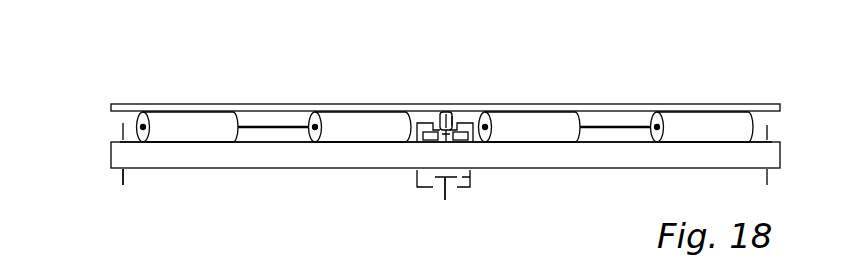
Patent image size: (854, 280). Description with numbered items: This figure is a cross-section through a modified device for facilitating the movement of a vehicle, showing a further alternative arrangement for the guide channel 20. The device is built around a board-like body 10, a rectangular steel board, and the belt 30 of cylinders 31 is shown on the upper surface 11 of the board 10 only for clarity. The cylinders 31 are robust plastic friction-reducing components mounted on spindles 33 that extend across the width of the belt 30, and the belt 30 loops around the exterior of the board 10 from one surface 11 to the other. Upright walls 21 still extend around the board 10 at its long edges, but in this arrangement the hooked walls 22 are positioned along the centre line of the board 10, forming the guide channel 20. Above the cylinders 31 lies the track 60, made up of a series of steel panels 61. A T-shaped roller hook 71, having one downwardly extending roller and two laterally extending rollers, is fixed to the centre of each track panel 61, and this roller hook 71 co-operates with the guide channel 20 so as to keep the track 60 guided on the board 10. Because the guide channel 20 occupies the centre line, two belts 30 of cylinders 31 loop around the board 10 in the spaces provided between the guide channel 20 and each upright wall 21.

The board-like body 10 is at (270, 157).
The surface 11 is at (213, 143).
The guide channel 20 is at (430, 125).
The upright wall 21 is at (123, 176).
The hooked wall 22 is at (468, 188).
The belt 30 is at (117, 123).
The cylinder 31 is at (180, 122).
The spindle 33 is at (612, 123).
The track 60 is at (364, 104).
The panel 61 is at (448, 110).
The roller hook 71 is at (463, 118).